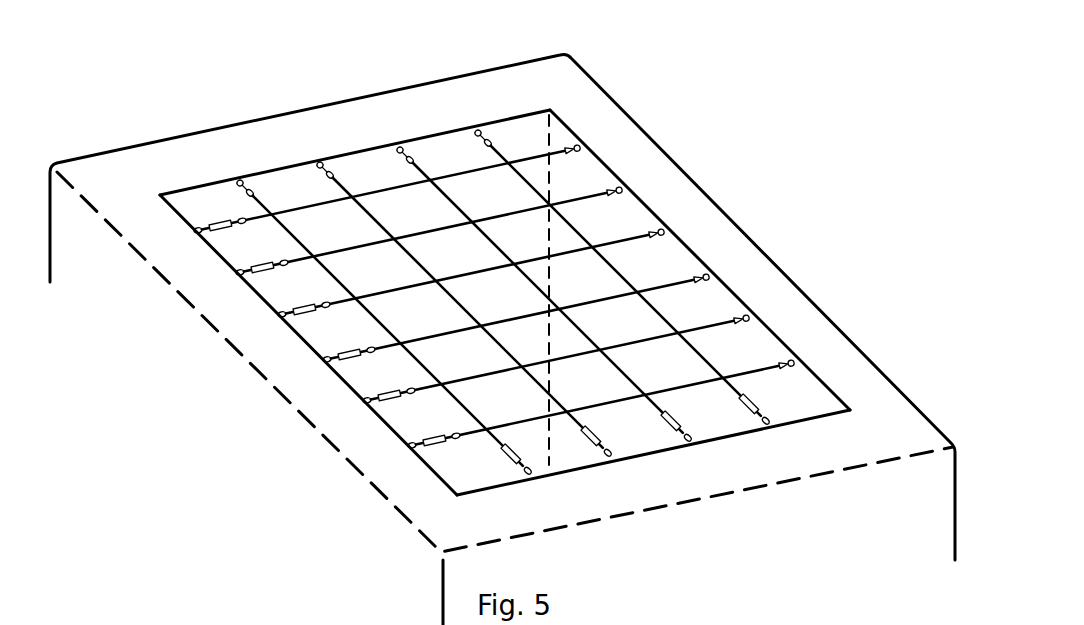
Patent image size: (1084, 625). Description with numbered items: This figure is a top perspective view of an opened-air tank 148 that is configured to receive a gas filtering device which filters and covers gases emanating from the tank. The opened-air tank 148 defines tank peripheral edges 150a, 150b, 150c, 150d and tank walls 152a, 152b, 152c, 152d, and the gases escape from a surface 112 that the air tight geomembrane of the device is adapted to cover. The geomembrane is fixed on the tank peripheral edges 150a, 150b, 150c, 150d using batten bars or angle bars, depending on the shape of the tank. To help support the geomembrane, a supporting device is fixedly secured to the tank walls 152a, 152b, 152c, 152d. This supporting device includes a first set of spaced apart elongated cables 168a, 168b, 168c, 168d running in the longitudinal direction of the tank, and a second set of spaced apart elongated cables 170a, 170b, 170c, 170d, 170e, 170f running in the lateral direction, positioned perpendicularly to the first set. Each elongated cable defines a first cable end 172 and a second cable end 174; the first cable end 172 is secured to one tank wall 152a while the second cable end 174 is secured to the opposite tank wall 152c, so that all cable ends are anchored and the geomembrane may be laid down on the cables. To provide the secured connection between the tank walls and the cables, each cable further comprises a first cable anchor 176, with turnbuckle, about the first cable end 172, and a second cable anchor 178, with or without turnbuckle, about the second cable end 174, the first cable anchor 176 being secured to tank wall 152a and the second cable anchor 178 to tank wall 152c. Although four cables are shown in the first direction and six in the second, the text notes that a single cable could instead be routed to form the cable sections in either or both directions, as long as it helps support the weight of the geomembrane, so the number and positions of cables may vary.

The surface 112 is at (723, 158).
The opened-air tank 148 is at (651, 90).
The tank peripheral edge 150a is at (613, 362).
The tank peripheral edge 150b is at (732, 277).
The tank peripheral edge 150c is at (353, 130).
The tank peripheral edge 150d is at (400, 208).
The tank wall 152a is at (727, 380).
The tank wall 152b is at (703, 310).
The tank wall 152c is at (363, 187).
The tank wall 152d is at (480, 253).
The elongated cable 168a is at (525, 408).
The elongated cable 168b is at (606, 464).
The elongated cable 168c is at (677, 373).
The elongated cable 168d is at (775, 400).
The elongated cable 170a is at (505, 425).
The elongated cable 170b is at (478, 376).
The elongated cable 170c is at (425, 338).
The elongated cable 170d is at (430, 281).
The elongated cable 170e is at (380, 238).
The elongated cable 170f is at (330, 200).
The first cable end 172 is at (608, 351).
The first cable anchor 176 is at (532, 378).
The second cable end 174 is at (152, 143).
The second cable anchor 178 is at (233, 187).